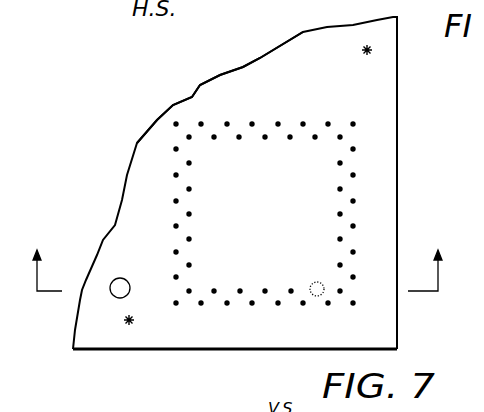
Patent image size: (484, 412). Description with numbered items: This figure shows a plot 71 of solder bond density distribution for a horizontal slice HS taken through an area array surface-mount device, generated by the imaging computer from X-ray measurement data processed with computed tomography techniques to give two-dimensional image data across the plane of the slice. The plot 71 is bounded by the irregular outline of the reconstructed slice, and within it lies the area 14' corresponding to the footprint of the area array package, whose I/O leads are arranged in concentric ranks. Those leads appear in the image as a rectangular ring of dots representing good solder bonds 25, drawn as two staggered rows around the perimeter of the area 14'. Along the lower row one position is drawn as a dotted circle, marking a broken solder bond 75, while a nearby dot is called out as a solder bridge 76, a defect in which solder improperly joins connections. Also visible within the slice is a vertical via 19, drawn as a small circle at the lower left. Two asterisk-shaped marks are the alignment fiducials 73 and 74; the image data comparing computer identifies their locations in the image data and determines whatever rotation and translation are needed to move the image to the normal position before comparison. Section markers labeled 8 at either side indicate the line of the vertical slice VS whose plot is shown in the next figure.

The section line 8- 8 is at (236, 260).
The area 14' is at (235, 183).
The vertical via 19 is at (120, 288).
The good solder bonds 25 is at (315, 136).
The plot 71 is at (204, 68).
The alignment fiducial 73 is at (364, 46).
The alignment fiducial 74 is at (126, 319).
The broken solder bond 75 is at (316, 297).
The solder bridge 76 is at (240, 294).